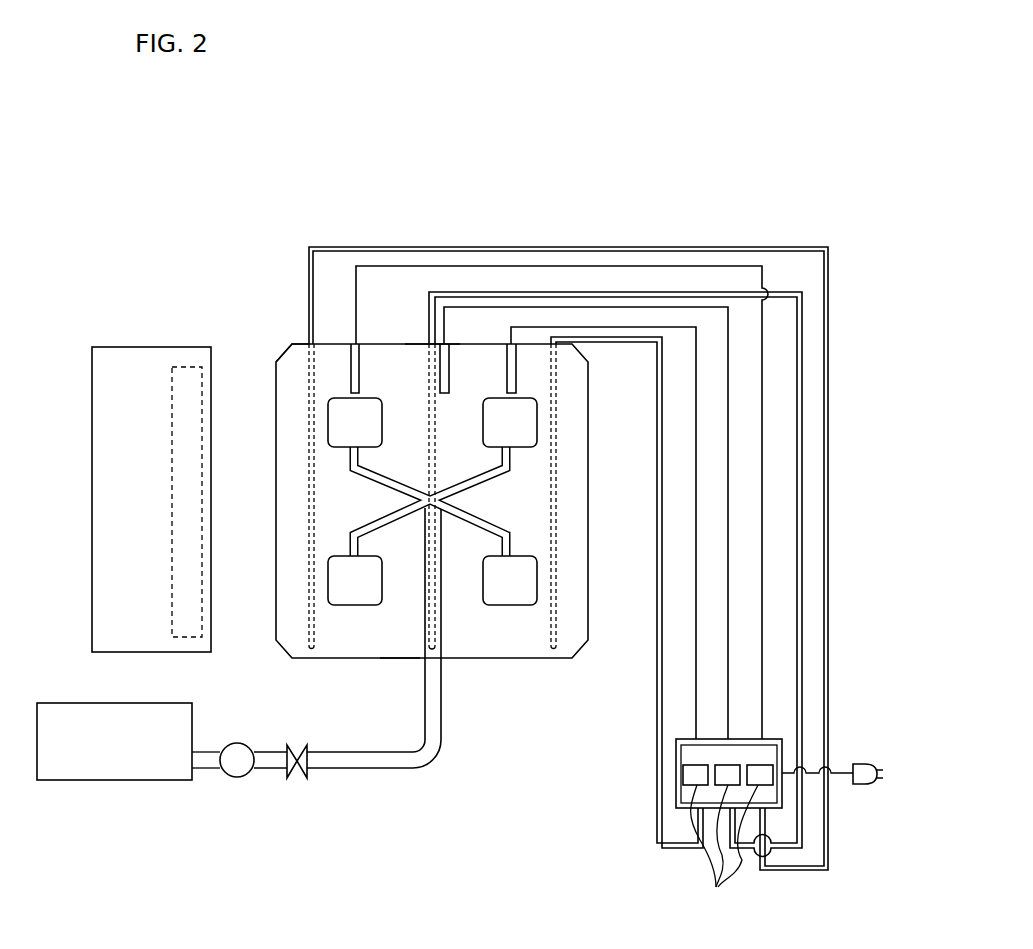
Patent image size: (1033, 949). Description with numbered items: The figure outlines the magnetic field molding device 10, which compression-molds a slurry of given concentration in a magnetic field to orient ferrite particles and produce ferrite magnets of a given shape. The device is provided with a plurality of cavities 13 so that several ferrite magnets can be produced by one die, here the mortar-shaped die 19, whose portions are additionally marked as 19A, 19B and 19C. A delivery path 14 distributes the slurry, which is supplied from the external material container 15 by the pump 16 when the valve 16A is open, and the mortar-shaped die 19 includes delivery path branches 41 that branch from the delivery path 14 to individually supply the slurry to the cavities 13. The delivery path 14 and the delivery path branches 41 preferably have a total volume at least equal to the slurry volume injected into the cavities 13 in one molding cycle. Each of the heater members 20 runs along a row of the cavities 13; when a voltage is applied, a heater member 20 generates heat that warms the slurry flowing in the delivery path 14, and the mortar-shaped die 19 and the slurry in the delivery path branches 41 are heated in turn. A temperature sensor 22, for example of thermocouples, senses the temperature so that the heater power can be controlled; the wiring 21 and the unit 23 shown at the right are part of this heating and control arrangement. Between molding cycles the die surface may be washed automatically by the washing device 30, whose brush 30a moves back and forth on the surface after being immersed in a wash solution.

The magnetic field molding device 10 is at (600, 176).
The cavities 13 is at (330, 430).
The delivery path 14 is at (440, 650).
The material container 15 is at (160, 783).
The pump 16 is at (231, 778).
The valve 16A is at (290, 780).
The mortar-shaped die 19 is at (518, 652).
The plate bottom side 19A is at (400, 650).
The plate central portion 19B is at (430, 375).
The plate corner portion 19C is at (303, 355).
The heater members 20 is at (309, 531).
The wires 21 is at (724, 854).
The temperature sensor 22 is at (351, 384).
The control box 23 is at (782, 742).
The washing device 30 is at (118, 355).
The brush 30a is at (185, 367).
The delivery path branches 41 is at (460, 514).